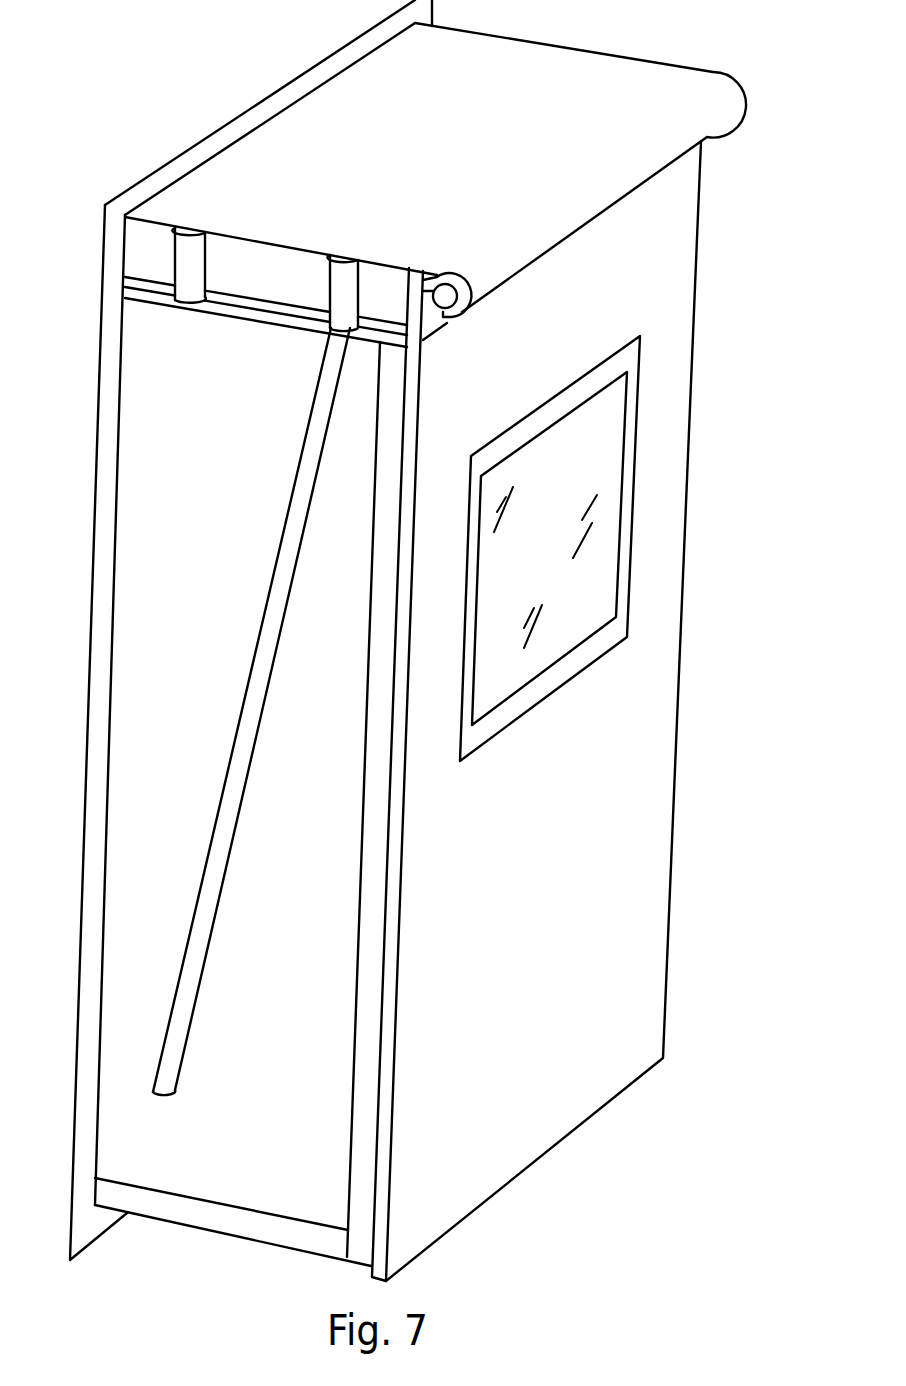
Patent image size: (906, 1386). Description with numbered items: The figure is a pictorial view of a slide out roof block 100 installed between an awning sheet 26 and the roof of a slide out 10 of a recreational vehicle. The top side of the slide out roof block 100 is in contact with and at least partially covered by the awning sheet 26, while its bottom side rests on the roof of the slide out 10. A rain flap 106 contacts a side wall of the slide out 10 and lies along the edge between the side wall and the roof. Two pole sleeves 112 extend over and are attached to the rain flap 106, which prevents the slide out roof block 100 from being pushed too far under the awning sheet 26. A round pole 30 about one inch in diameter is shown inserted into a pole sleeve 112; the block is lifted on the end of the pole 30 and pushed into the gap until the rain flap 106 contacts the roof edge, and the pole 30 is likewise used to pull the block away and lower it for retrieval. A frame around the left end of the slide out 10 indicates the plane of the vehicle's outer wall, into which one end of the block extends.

The slide out 10 is at (695, 383).
The awning sheet 26 is at (270, 152).
The pole 30 is at (257, 645).
The slide out roof block 100 is at (142, 263).
The rain flap 106 is at (260, 313).
The pole sleeve 112 is at (178, 311).